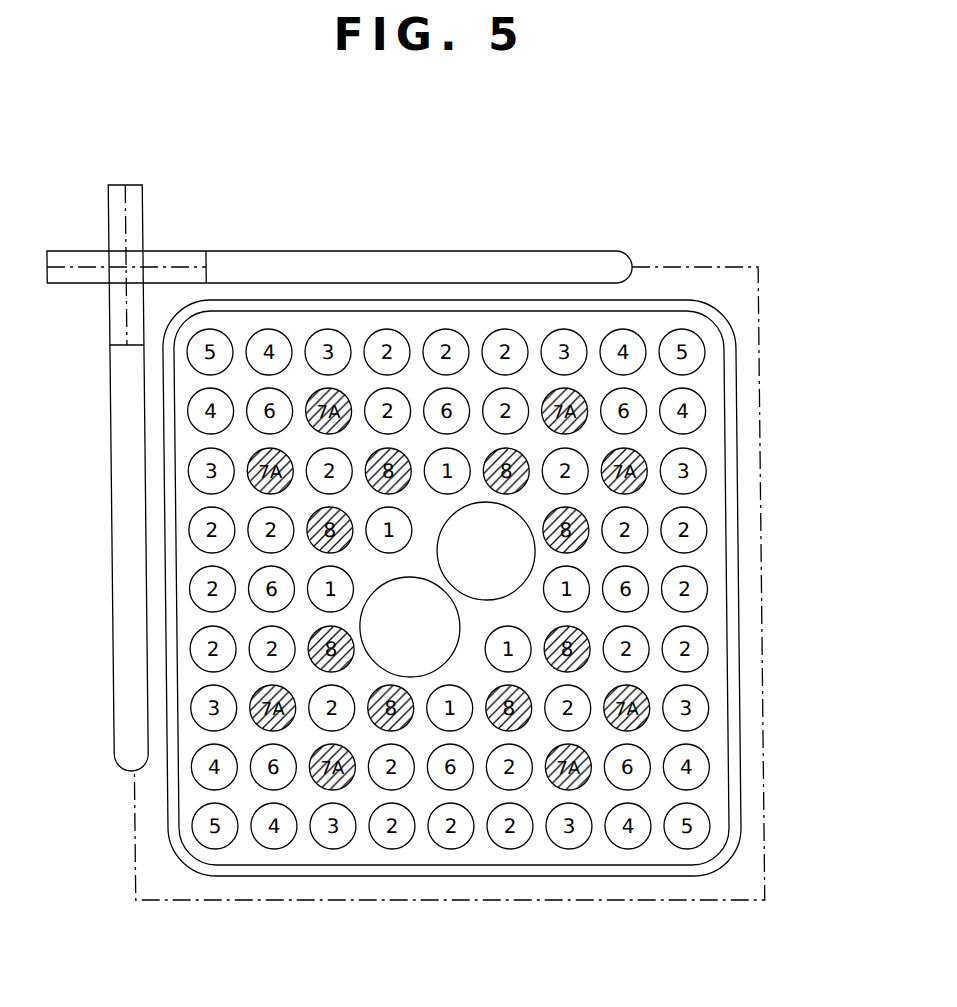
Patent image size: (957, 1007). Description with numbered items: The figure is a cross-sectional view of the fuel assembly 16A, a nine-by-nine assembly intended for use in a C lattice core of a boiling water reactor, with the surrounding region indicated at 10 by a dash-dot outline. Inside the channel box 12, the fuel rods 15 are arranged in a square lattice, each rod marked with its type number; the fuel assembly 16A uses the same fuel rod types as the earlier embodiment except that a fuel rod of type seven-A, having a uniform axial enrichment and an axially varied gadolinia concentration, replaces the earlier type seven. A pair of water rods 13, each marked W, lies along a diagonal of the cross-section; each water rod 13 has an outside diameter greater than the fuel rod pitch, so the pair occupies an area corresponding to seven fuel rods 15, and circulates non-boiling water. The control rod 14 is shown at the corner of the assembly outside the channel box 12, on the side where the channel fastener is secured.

The processing chamber 10 is at (757, 742).
The channel box 12 is at (736, 370).
The water rod 13 is at (535, 512).
The control rod 14 is at (531, 250).
The fuel rod 15 is at (577, 849).
The fuel assembly 16A is at (433, 876).